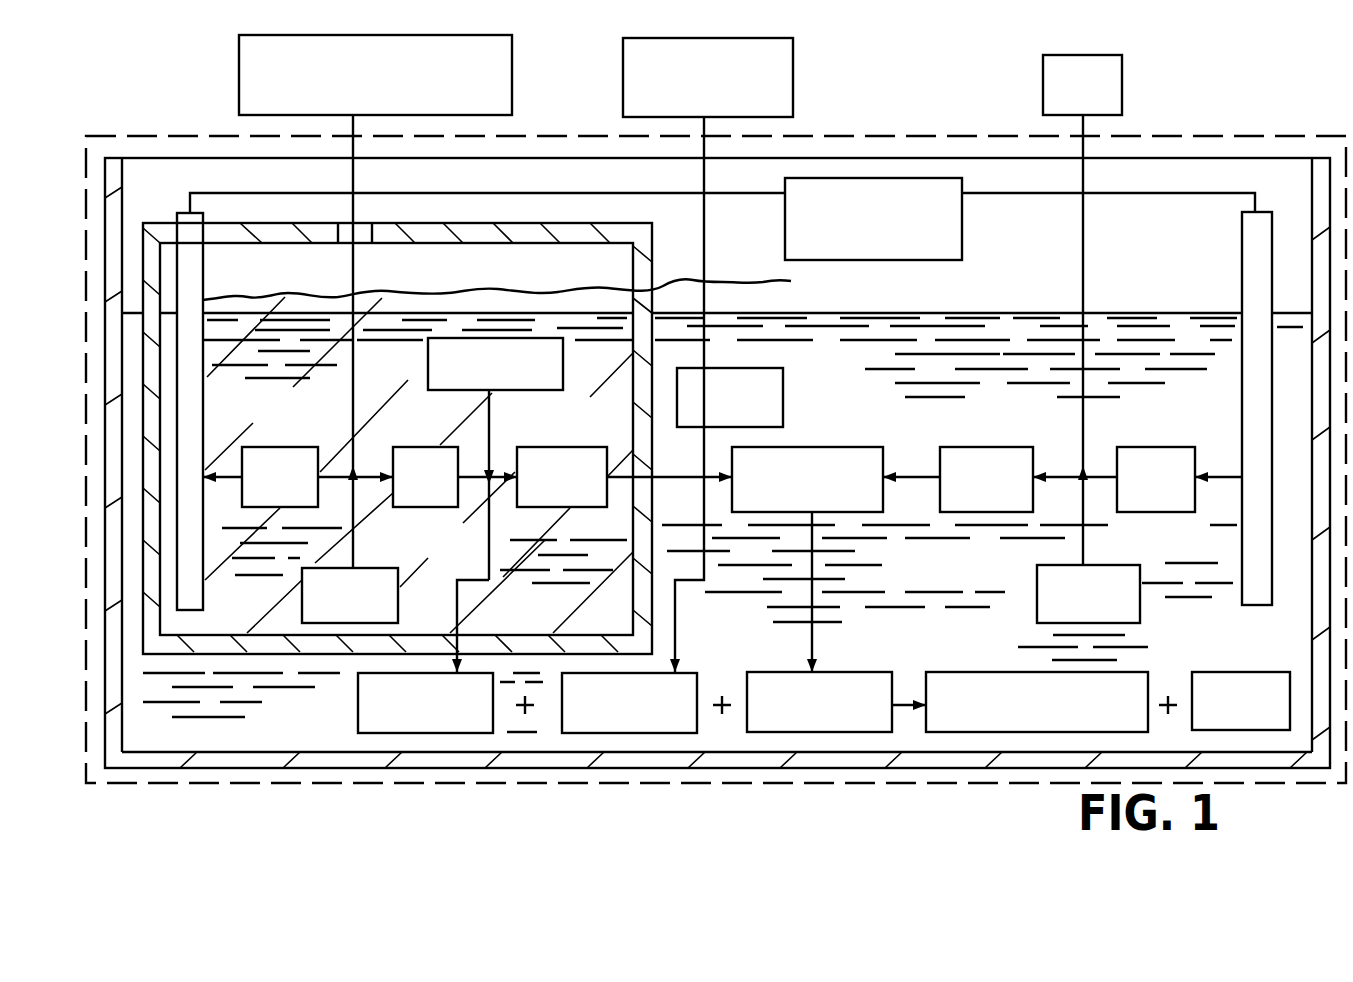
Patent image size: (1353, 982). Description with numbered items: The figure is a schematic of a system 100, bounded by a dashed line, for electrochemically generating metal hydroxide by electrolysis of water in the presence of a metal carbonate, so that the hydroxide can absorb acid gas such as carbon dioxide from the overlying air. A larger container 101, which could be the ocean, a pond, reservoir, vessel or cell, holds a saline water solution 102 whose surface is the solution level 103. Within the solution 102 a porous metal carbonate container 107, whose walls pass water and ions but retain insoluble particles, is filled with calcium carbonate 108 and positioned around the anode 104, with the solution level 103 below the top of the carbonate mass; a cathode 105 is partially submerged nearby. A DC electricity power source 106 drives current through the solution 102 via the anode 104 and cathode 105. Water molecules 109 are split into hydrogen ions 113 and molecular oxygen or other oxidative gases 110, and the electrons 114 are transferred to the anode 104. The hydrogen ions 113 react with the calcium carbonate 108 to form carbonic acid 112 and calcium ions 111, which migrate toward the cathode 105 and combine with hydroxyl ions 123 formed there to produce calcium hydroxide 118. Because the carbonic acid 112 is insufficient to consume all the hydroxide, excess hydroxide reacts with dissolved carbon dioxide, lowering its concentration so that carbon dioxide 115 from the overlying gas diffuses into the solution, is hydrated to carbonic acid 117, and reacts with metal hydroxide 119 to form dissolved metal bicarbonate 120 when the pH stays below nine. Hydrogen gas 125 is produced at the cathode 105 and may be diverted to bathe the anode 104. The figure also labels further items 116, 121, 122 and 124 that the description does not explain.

The system 100 is at (1277, 136).
The container 101 is at (282, 768).
The water solution 102 is at (965, 580).
The solution level 103 is at (986, 312).
The anode 104 is at (183, 214).
The cathode 105 is at (1242, 236).
The DC electricity power source 106 is at (962, 238).
The porous metal carbonate container 107 is at (670, 278).
The calcium carbonate 108 is at (429, 366).
The water molecules 109 is at (380, 568).
The molecular oxygen and/or other oxidative gases 110 is at (512, 78).
The calcium ions 111 is at (536, 447).
The carbonic acid 112 is at (358, 704).
The hydrogen ions 113 is at (415, 445).
The electrons 114 is at (275, 445).
The carbon dioxide in overlying gas 115 is at (793, 80).
The added water (+H2O) 116 is at (784, 385).
The carbonic acid 117 is at (683, 672).
The calcium hydroxide 118 is at (832, 445).
The metal hydroxide 119 is at (862, 672).
The dissolved metal bicarbonate 120 is at (987, 669).
The water (2H2O) 121 is at (1214, 670).
The water (2H2O) at cathode 122 is at (1120, 564).
The hydroxyl ions 123 is at (985, 446).
The electrons (2e-) at cathode 124 is at (1146, 446).
The hydrogen gas 125 is at (1043, 96).